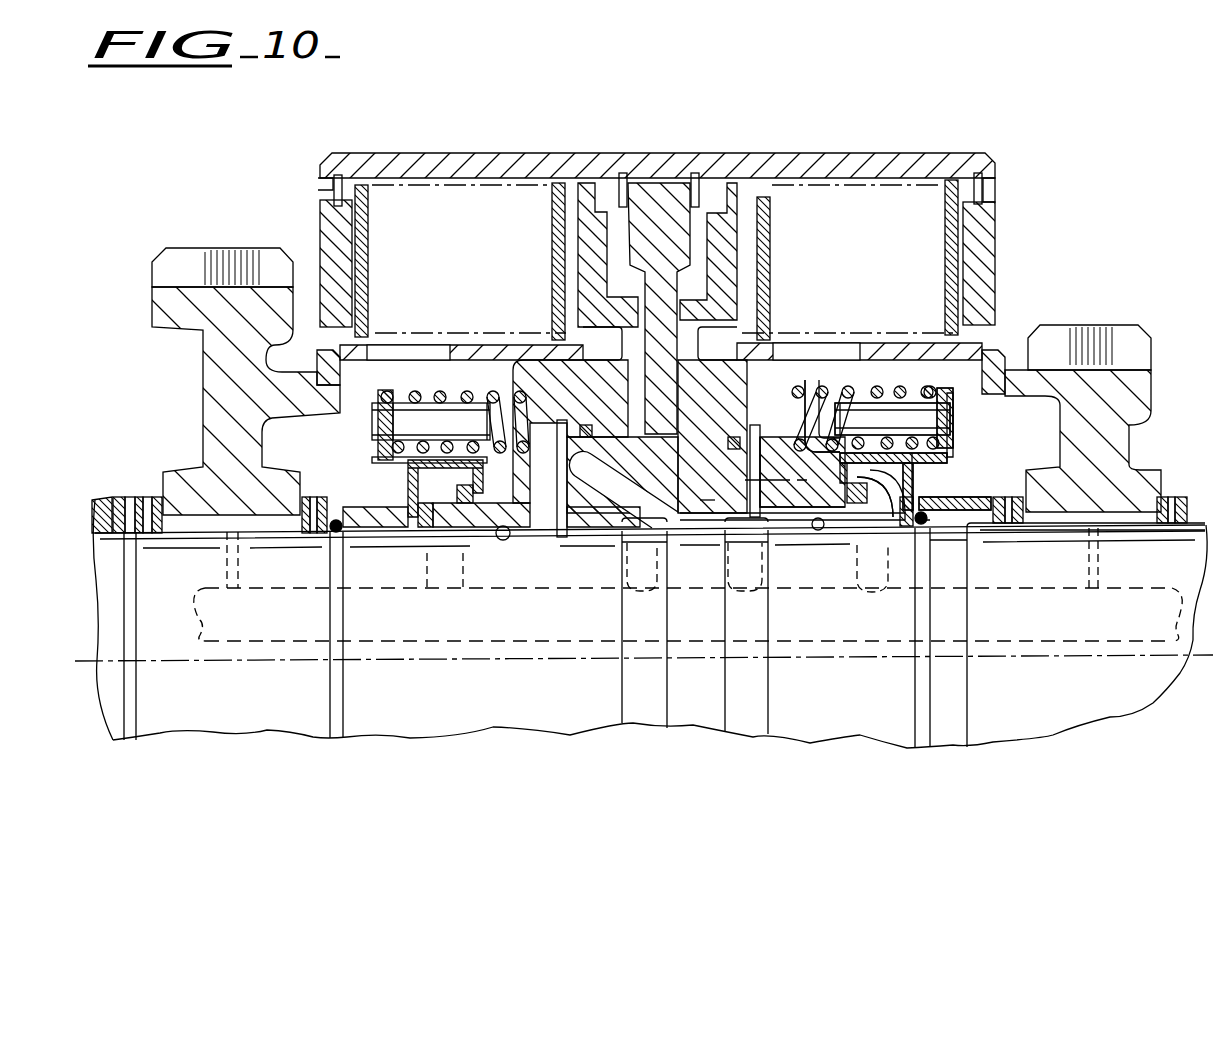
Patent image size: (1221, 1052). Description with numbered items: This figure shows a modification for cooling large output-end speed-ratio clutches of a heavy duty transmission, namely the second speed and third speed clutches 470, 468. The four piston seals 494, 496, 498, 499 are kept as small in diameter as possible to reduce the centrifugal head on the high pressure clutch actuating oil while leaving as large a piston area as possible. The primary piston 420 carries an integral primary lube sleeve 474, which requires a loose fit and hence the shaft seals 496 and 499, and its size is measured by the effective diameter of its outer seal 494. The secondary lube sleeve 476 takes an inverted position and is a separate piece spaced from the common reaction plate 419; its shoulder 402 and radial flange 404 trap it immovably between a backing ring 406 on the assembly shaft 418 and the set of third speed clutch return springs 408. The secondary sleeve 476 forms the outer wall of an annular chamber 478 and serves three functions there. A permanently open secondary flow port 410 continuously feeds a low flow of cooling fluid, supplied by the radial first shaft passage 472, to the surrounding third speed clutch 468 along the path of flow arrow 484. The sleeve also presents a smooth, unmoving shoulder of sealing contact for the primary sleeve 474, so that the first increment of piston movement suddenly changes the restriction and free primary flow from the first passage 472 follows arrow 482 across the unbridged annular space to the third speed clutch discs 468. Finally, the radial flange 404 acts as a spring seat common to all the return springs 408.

The second speed clutch 470 is at (550, 226).
The third speed clutch 468 is at (767, 308).
The piston seal 498 is at (588, 425).
The outer seal 494 is at (733, 437).
The primary piston 420 is at (775, 398).
The third speed clutch return springs 408 is at (930, 392).
The secondary lube sleeve 476 is at (815, 403).
The secondary flow port 410 is at (872, 450).
The flow arrow 484 is at (897, 450).
The radial flange 404 is at (943, 449).
The shoulder 402 is at (917, 463).
The backing ring 406 is at (908, 492).
The assembly shaft 418 is at (952, 521).
The arrow 482 is at (745, 480).
The common reaction plate 419 is at (707, 500).
The shaft seal 496 is at (808, 520).
The primary lube sleeve 474 is at (833, 507).
The annular chamber 478 is at (893, 493).
The first shaft passage 472 is at (893, 580).
The shaft seal 499 is at (510, 528).